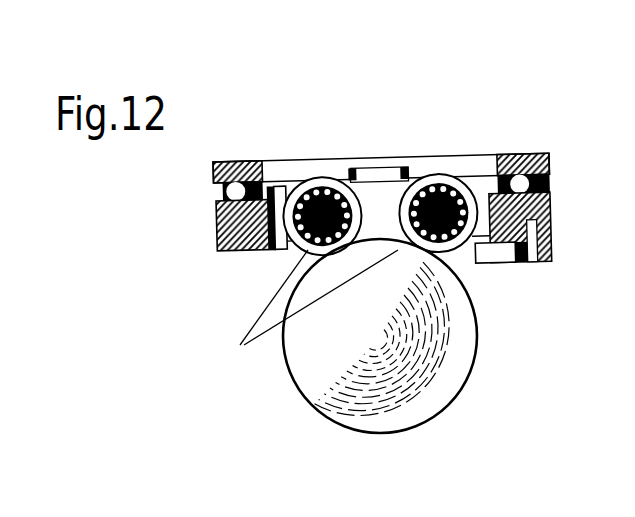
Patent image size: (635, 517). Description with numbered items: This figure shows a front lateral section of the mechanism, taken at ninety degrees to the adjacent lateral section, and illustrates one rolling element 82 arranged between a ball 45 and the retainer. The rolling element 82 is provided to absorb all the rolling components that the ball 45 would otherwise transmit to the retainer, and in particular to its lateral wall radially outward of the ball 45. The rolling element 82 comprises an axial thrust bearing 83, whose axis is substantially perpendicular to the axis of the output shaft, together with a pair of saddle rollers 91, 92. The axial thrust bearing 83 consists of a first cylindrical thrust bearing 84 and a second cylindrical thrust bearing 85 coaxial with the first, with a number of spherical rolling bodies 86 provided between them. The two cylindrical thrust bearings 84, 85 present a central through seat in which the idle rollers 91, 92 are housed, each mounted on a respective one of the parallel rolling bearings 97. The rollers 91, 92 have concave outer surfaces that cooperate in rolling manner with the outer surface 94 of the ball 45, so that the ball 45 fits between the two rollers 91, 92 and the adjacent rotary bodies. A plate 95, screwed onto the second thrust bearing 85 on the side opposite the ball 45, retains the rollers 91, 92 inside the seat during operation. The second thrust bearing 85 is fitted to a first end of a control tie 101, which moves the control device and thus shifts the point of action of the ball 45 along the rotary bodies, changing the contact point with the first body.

The rolling element 82 is at (351, 255).
The axial thrust bearing 83 is at (322, 238).
The first cylindrical thrust bearing 84 is at (384, 224).
The second cylindrical thrust bearing 85 is at (381, 168).
The spherical rolling bodies 86 is at (386, 188).
The saddle roller 91 is at (322, 216).
The saddle roller 92 is at (438, 213).
The outer surface 94 is at (329, 426).
The plate 95 is at (378, 175).
The rolling bearings 97 is at (308, 315).
The control tie 101 is at (495, 252).
The ball 45 is at (310, 367).